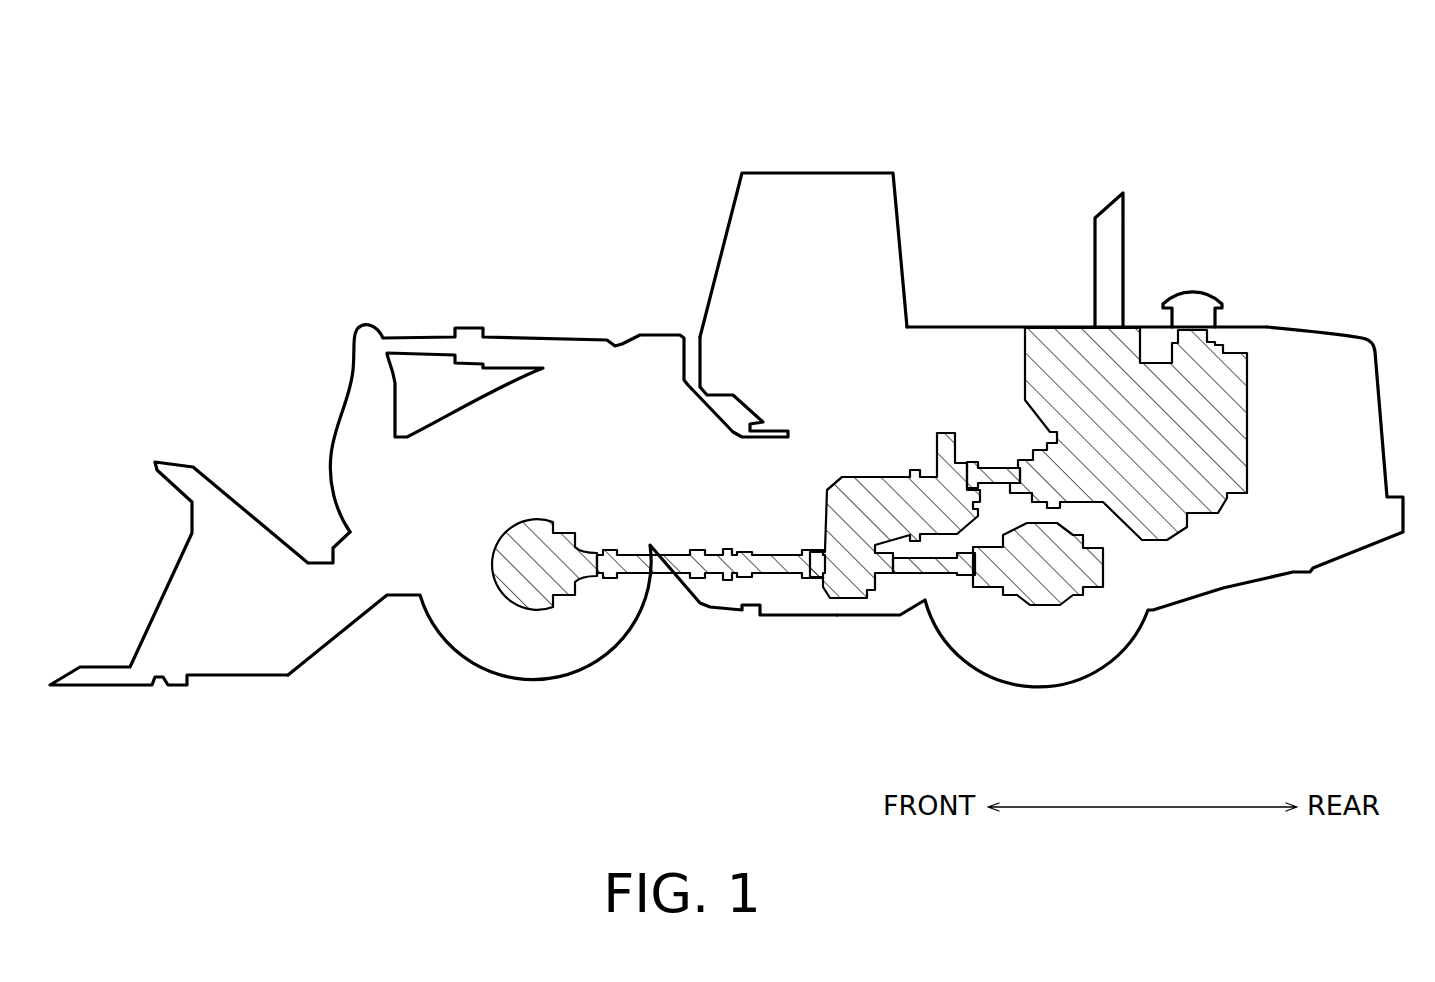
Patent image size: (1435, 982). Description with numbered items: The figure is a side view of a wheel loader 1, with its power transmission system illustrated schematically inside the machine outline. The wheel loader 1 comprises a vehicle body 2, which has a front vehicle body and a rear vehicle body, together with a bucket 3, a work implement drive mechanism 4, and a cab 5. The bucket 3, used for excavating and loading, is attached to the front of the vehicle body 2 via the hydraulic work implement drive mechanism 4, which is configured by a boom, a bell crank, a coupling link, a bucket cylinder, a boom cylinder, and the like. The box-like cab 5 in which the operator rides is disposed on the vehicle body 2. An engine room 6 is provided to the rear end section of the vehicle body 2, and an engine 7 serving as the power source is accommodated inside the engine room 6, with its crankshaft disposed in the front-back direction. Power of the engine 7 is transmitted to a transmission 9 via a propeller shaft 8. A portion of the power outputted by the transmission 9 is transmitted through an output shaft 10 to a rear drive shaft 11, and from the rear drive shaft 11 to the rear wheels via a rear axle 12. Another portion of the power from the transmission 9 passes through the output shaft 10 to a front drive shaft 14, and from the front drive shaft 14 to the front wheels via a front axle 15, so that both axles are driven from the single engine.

The wheel loader 1 is at (735, 371).
The vehicle body 2 is at (945, 337).
The bucket 3 is at (222, 500).
The work implement drive mechanism 4 is at (381, 299).
The cab 5 is at (840, 183).
The engine room 6 is at (1289, 344).
The engine 7 is at (1237, 423).
The propeller shaft 8 is at (990, 466).
The transmission 9 is at (825, 503).
The output shaft 10 is at (807, 562).
The rear drive shaft 11 is at (903, 575).
The rear axle 12 is at (1040, 603).
The front drive shaft 14 is at (687, 578).
The front axle 15 is at (532, 600).